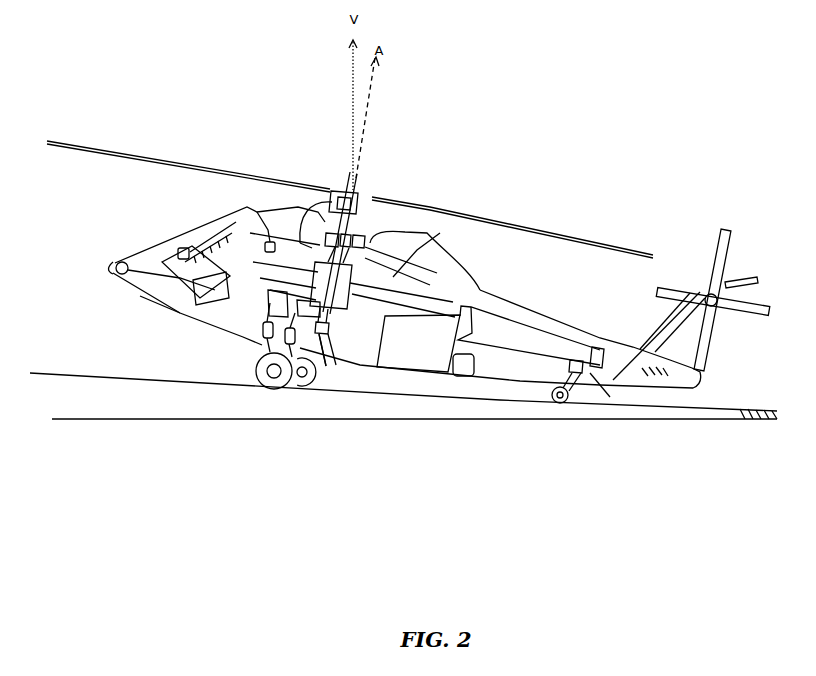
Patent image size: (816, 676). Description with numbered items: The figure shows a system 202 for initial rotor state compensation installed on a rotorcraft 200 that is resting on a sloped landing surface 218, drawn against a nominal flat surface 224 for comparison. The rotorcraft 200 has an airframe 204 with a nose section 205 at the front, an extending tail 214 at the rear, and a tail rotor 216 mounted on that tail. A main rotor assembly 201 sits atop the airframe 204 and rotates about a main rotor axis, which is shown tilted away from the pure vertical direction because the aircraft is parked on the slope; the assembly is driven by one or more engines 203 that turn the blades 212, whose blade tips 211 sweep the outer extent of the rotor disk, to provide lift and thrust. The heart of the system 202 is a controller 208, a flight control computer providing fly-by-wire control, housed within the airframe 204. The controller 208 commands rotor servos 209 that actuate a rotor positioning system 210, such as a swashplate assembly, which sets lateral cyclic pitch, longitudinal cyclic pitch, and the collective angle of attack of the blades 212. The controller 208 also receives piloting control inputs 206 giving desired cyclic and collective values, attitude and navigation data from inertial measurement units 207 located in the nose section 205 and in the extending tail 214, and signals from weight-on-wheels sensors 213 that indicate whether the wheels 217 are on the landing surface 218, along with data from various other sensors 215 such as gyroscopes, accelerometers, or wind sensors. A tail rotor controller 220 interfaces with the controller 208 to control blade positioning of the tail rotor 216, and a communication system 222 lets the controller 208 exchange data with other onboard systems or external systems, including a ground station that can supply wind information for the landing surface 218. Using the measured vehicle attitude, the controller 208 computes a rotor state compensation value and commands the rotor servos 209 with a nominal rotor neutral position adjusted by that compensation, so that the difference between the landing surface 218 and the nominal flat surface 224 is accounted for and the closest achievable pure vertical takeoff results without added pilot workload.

The rotorcraft 200 is at (552, 189).
The main rotor assembly 201 is at (328, 205).
The system 202 is at (350, 329).
The engines 203 is at (440, 233).
The airframe 204 is at (140, 296).
The nose section 205 is at (111, 263).
The piloting control inputs 206 is at (183, 250).
The inertial measurement units 207 is at (113, 273).
The controller 208 is at (331, 278).
The rotor servos 209 is at (320, 200).
The rotor positioning system 210 is at (364, 197).
The blade tips 211 is at (48, 139).
The blades 212 is at (427, 204).
The weight-on-wheels sensors 213 is at (267, 371).
The extending tail 214 is at (597, 385).
The sensors 215 is at (236, 205).
The tail rotor 216 is at (737, 268).
The wheels 217 is at (255, 388).
The landing surface 218 is at (87, 377).
The tail rotor controller 220 is at (600, 346).
The communication system 222 is at (321, 335).
The nominal flat surface 224 is at (128, 420).